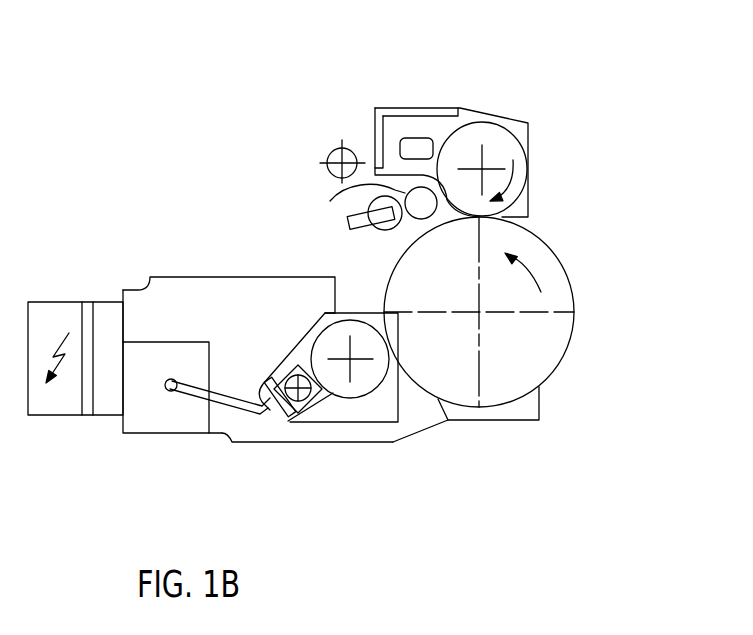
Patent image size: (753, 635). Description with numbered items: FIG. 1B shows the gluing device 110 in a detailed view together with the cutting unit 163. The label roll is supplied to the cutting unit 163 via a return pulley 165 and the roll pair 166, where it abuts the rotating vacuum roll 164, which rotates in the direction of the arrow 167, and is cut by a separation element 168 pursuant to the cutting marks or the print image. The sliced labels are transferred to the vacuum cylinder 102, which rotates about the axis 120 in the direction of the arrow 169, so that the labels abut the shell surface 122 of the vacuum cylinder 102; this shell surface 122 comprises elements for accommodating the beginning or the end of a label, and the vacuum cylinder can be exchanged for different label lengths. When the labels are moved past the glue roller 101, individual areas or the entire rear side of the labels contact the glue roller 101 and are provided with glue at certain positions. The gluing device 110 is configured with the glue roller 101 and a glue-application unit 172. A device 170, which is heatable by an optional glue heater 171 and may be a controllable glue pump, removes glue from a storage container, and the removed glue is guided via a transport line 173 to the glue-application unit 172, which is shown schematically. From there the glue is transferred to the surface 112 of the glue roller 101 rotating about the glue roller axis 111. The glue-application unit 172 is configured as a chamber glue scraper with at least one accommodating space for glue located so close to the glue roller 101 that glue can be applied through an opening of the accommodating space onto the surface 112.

The glue roller 101 is at (366, 390).
The vacuum cylinder 102 is at (548, 378).
The gluing device 110 is at (199, 456).
The glue roller axis 111 is at (340, 375).
The surface of the glue roller 112 is at (403, 370).
The axis 120 is at (480, 314).
The shell surface 122 is at (527, 405).
The cutting unit 163 is at (487, 94).
The vacuum roll 164 is at (517, 150).
The return pulley 165 is at (334, 151).
The roll pair 166 is at (365, 203).
The arrow 167 is at (517, 182).
The separation element 168 is at (411, 138).
The arrow 169 is at (548, 283).
The device for removing glue 170 is at (152, 433).
The glue heater 171 is at (52, 312).
The glue-application unit 172 is at (289, 430).
The transport line 173 is at (221, 432).